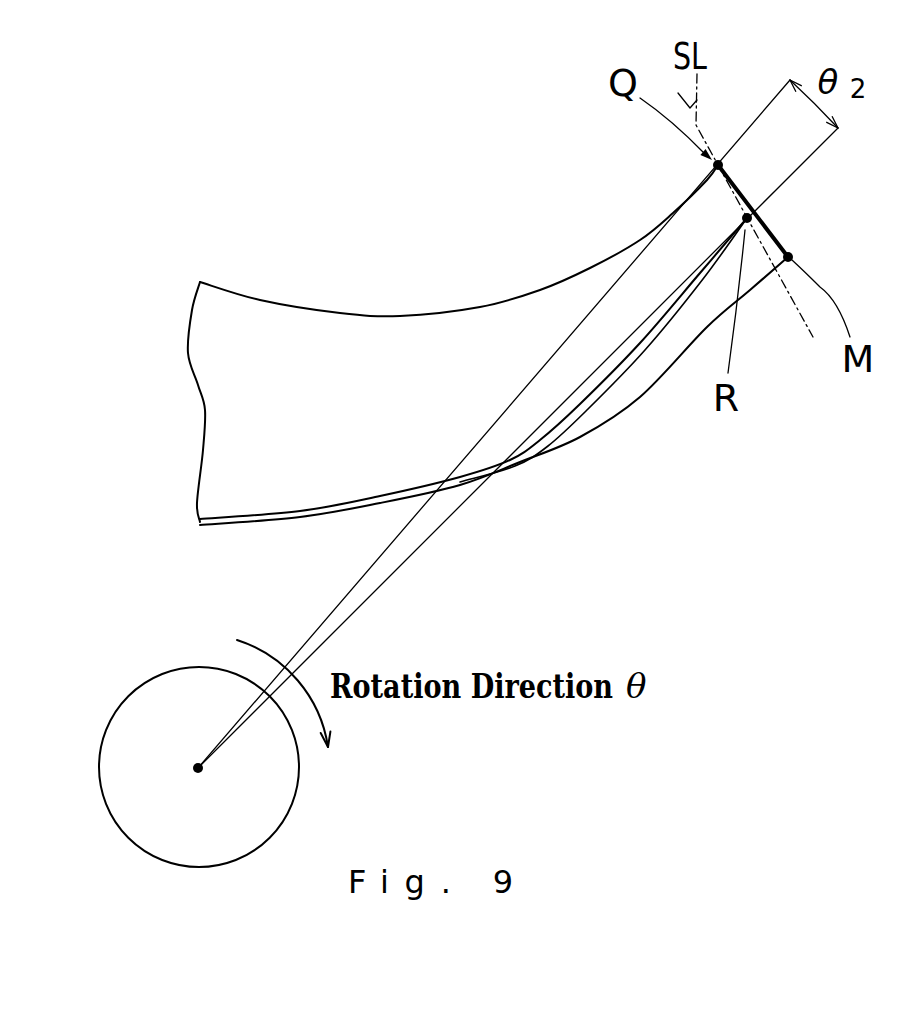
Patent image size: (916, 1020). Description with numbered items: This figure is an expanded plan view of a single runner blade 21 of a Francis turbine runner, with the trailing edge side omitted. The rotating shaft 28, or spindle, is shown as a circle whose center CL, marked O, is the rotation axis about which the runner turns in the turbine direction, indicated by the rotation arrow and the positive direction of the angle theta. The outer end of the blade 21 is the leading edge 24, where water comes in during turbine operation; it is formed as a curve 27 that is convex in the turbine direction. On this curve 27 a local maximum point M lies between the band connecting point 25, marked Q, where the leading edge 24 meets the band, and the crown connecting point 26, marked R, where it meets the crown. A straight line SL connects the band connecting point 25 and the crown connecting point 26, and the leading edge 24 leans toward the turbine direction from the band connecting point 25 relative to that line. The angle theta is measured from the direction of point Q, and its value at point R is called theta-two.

The runner blade 21 is at (288, 320).
The leading edge 24 is at (755, 212).
The band connecting point 25 is at (716, 164).
The crown connecting point 26 is at (748, 224).
The curve 27 is at (772, 235).
The rotating shaft 28 is at (157, 672).